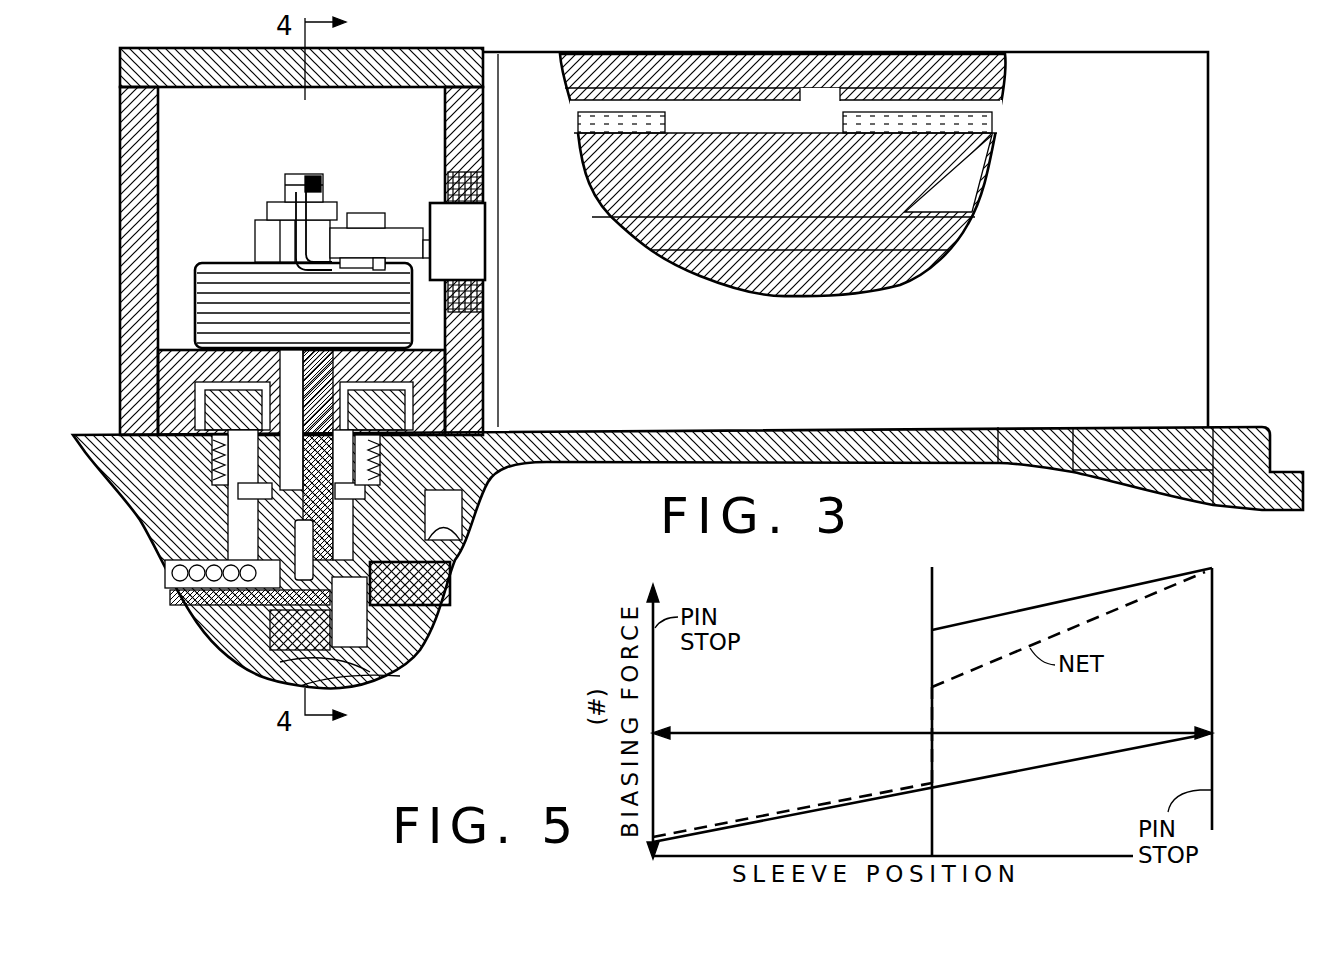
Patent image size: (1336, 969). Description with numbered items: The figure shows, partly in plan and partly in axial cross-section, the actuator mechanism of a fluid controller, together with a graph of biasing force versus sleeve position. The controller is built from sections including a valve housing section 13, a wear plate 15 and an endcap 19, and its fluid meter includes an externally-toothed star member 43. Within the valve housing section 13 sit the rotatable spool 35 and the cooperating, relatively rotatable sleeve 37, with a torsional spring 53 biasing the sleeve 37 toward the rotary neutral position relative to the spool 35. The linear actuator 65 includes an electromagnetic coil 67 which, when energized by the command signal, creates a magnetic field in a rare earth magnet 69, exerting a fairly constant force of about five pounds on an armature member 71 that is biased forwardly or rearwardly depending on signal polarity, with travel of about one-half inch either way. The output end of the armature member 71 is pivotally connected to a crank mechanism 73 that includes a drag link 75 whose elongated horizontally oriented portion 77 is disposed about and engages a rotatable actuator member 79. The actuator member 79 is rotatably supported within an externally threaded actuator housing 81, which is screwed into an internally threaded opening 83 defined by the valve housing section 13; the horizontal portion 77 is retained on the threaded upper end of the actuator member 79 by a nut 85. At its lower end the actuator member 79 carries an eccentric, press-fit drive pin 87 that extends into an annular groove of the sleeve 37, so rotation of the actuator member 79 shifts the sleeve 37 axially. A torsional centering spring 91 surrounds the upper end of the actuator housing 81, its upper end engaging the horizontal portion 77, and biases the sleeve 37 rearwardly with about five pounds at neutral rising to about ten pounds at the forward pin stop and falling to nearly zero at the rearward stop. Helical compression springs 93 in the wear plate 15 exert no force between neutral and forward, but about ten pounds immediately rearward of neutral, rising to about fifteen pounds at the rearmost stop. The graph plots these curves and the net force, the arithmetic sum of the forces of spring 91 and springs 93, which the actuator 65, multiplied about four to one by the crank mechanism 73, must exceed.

In FIG. 3, the valve housing section 13 is at (115, 480).
In FIG. 3, the wear plate 15 is at (1020, 470).
In FIG. 3, the endcap 19 is at (1240, 490).
In FIG. 3, the primary rotatable valve member 35 is at (410, 655).
In FIG. 3, the follow-up valve member 37 is at (440, 590).
In FIG. 3, the star member 43 is at (1165, 505).
In FIG. 3, the torsional spring 53 is at (190, 560).
In FIG. 3, the linear actuator 65 is at (818, 45).
In FIG. 3, the electromagnetic coil 67 is at (980, 116).
In FIG. 3, the rare earth magnet 69 is at (600, 165).
In FIG. 3, the armature member 71 is at (440, 215).
In FIG. 3, the crank mechanism 73 is at (273, 182).
In FIG. 3, the drag link 75 is at (370, 235).
In FIG. 3, the horizontally oriented portion 77 is at (285, 247).
In FIG. 3, the actuator member 79 is at (365, 420).
In FIG. 3, the actuator housing 81 is at (215, 403).
In FIG. 3, the internally threaded opening 83 is at (395, 455).
In FIG. 3, the nut 85 is at (337, 200).
In FIG. 3, the drive pin 87 is at (255, 638).
In FIG. 3, the torsional centering spring 91 is at (236, 265).
In FIG. 5, the torsional centering spring 91 is at (1035, 770).
In FIG. 5, the helical compression spring 93 is at (1012, 598).